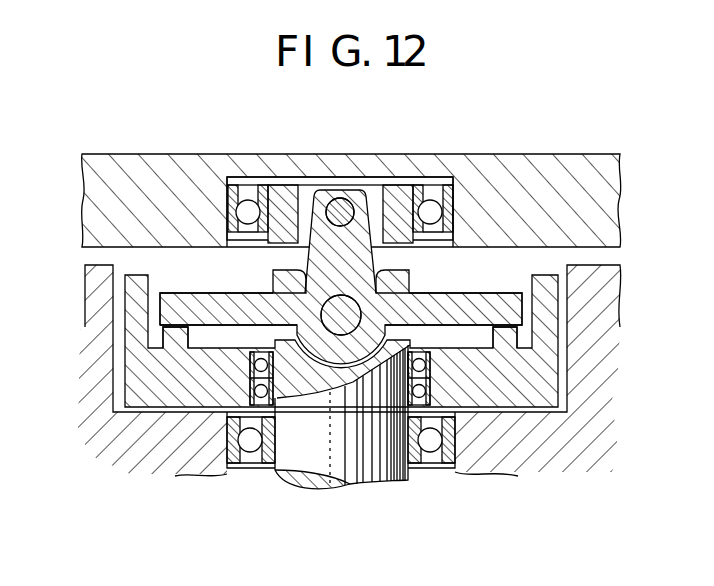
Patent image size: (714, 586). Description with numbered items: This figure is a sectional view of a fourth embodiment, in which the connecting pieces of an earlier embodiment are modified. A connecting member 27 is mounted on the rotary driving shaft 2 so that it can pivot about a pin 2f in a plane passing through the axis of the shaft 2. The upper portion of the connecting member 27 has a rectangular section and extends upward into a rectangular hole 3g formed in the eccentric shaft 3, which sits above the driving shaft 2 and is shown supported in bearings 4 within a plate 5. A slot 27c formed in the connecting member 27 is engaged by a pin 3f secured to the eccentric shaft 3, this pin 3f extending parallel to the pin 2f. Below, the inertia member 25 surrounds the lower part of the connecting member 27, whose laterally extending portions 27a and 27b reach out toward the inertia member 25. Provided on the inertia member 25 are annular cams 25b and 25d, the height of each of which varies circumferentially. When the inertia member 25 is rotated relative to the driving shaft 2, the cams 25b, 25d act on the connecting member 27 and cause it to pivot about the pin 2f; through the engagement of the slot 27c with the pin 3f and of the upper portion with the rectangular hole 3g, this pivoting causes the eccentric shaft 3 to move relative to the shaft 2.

The rotary driving shaft 2 is at (383, 473).
The pin 2f is at (341, 300).
The eccentric shaft 3 is at (287, 186).
The pin 3f is at (353, 202).
The rectangular hole 3g is at (309, 192).
The ball bearing 4 is at (445, 210).
The upper plate 5 is at (174, 163).
The inertia member 25 is at (543, 390).
The annular cam 25b is at (163, 337).
The annular cam 25d is at (510, 337).
The connecting member 27 is at (363, 203).
The right flange of hub 27a is at (500, 298).
The left flange of hub 27b is at (163, 302).
The slot 27c is at (343, 197).